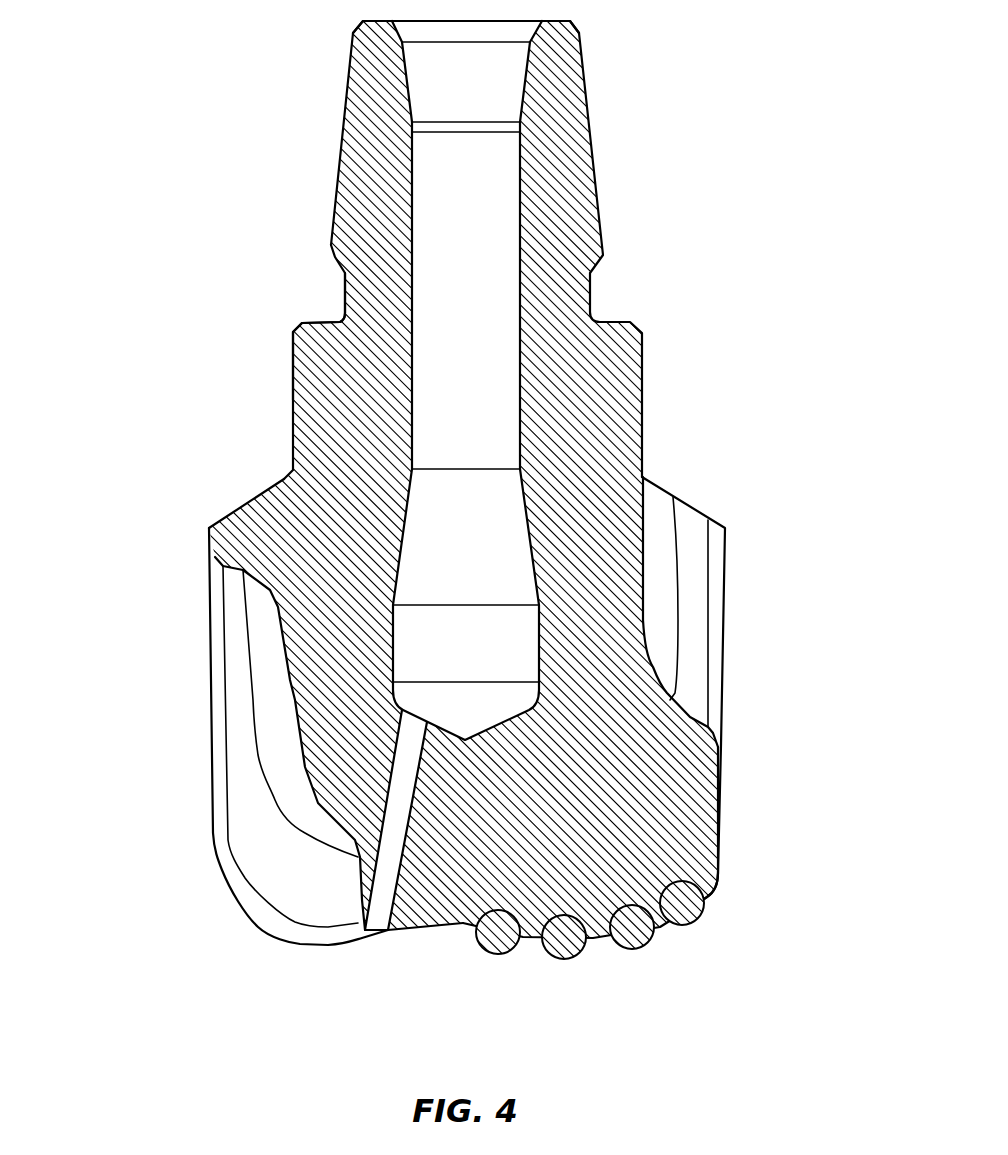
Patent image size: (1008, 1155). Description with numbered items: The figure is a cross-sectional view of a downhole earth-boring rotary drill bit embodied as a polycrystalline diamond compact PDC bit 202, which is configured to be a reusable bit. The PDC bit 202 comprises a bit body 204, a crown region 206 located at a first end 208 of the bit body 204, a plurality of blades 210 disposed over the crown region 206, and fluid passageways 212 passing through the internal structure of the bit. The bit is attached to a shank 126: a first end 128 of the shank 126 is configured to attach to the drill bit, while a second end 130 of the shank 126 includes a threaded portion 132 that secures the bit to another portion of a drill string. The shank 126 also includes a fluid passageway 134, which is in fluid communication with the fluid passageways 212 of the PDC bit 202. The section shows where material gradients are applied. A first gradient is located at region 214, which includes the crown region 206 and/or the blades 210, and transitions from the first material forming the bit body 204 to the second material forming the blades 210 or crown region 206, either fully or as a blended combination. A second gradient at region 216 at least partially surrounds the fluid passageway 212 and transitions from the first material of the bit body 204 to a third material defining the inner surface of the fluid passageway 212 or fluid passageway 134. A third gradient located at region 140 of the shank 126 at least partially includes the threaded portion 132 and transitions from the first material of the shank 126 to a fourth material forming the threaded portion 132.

The second end of the shank 130 is at (646, 62).
The threaded portion 132 is at (641, 129).
The region of third gradient 140 is at (330, 103).
The fluid passageway of the shank 134 is at (410, 190).
The shank 126 is at (358, 297).
The first end of the shank 128 is at (665, 446).
The PDC bit 202 is at (197, 610).
The bit body 204 is at (652, 735).
The crown region 206 is at (648, 967).
The first end of the bit body 208 is at (265, 950).
The plurality of blades 210 is at (292, 883).
The fluid passageways 212 is at (405, 785).
The region of first gradient 214 is at (740, 885).
The region of second gradient 216 is at (423, 912).